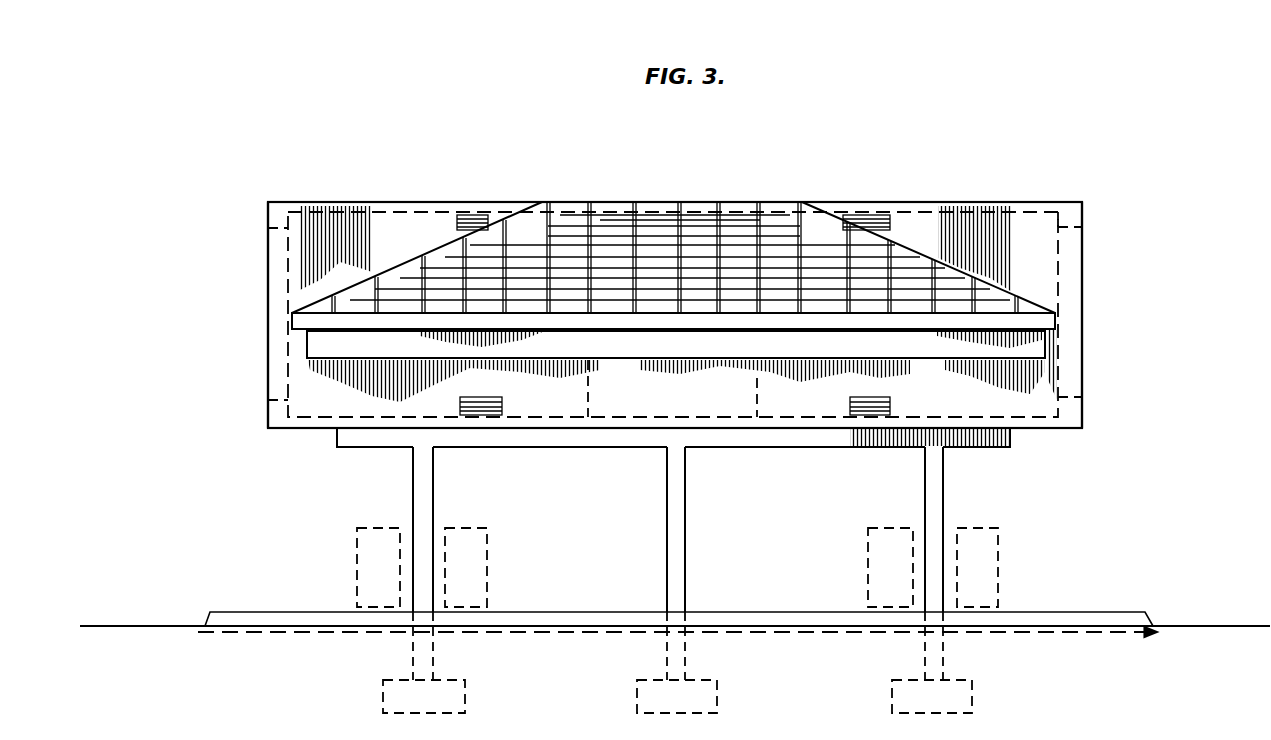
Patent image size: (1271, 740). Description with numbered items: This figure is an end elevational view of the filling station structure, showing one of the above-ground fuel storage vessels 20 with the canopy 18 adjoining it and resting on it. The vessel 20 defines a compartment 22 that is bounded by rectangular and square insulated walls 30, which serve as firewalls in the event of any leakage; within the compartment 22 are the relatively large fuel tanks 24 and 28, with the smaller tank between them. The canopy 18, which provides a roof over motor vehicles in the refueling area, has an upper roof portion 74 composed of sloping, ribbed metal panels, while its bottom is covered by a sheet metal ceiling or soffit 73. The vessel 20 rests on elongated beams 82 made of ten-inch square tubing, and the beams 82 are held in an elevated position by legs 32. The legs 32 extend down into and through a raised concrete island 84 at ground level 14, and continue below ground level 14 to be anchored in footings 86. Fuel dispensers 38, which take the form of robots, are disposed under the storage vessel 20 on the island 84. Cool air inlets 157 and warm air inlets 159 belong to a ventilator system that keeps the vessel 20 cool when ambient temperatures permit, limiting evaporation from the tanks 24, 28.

The ground level 14 is at (1226, 625).
The canopy 18 is at (660, 202).
The fuel storage vessel 20 is at (301, 202).
The compartment 22 is at (1050, 429).
The first relatively large fuel tank 24 is at (1040, 210).
The third relatively large fuel tank 28 is at (350, 212).
The wall 30 is at (268, 210).
The leg 32 is at (426, 492).
The fuel dispenser 38 is at (356, 560).
The soffit 73 is at (617, 361).
The upper roof portion 74 is at (560, 228).
The beam 82 is at (640, 448).
The raised concrete island 84 is at (268, 612).
The footing 86 is at (637, 700).
The cool air inlet 157 is at (462, 405).
The warm air inlet 159 is at (465, 215).